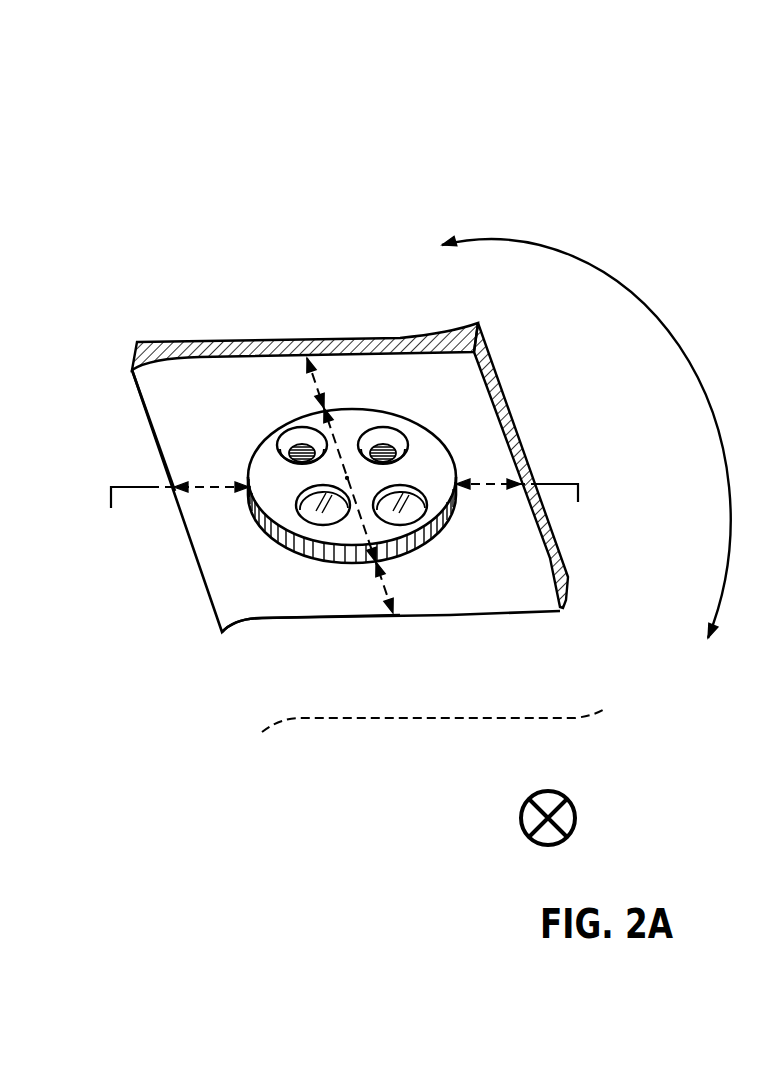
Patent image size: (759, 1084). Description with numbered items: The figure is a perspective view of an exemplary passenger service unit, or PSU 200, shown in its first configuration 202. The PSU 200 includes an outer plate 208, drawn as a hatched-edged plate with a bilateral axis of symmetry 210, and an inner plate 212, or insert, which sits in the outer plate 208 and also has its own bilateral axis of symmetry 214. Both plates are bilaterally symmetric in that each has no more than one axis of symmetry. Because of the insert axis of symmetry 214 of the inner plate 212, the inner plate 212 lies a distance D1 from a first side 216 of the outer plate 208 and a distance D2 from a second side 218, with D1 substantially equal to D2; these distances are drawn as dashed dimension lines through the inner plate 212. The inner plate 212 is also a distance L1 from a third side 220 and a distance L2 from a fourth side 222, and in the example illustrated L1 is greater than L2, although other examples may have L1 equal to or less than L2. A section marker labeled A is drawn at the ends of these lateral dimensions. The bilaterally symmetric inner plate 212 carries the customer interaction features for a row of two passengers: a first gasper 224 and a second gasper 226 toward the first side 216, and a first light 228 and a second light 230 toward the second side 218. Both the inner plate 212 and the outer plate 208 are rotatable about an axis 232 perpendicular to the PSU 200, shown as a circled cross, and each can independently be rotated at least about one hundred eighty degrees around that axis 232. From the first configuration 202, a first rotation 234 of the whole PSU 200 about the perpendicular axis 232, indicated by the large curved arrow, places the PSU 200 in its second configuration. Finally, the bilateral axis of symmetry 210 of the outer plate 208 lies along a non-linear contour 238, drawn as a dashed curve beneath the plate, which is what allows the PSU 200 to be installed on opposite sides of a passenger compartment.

The passenger service unit 200 is at (305, 165).
The first configuration 202 is at (220, 760).
The outer plate 208 is at (235, 385).
The bilateral axis of symmetry 210 is at (148, 490).
The inner plate 212 is at (412, 434).
The bilateral axis of symmetry 214 is at (347, 478).
The first side 216 is at (247, 345).
The second side 218 is at (308, 620).
The third side 220 is at (140, 408).
The fourth side 222 is at (555, 562).
The first gasper 224 is at (291, 433).
The second gasper 226 is at (383, 435).
The first light 228 is at (307, 513).
The second light 230 is at (415, 512).
The axis 232 is at (577, 823).
The first rotation 234 is at (553, 242).
The non-linear contour 238 is at (503, 720).
The distance L1 is at (210, 485).
The distance L2 is at (490, 483).
The distance D1 is at (315, 383).
The distance D2 is at (385, 590).
The section A- A is at (347, 522).